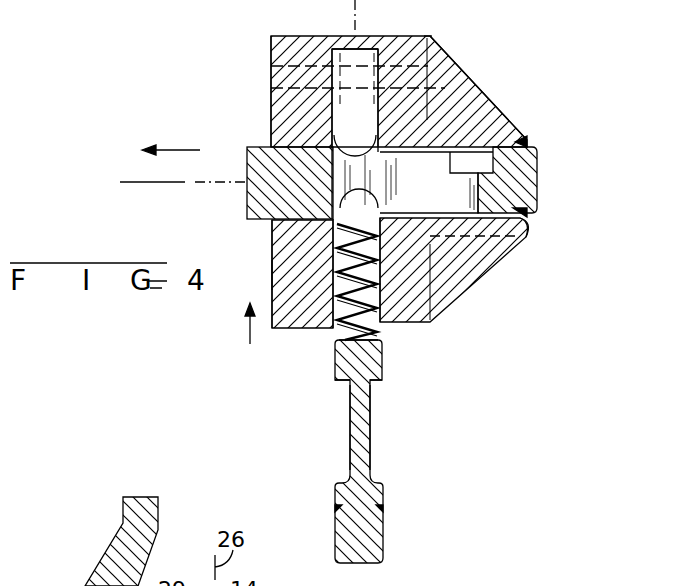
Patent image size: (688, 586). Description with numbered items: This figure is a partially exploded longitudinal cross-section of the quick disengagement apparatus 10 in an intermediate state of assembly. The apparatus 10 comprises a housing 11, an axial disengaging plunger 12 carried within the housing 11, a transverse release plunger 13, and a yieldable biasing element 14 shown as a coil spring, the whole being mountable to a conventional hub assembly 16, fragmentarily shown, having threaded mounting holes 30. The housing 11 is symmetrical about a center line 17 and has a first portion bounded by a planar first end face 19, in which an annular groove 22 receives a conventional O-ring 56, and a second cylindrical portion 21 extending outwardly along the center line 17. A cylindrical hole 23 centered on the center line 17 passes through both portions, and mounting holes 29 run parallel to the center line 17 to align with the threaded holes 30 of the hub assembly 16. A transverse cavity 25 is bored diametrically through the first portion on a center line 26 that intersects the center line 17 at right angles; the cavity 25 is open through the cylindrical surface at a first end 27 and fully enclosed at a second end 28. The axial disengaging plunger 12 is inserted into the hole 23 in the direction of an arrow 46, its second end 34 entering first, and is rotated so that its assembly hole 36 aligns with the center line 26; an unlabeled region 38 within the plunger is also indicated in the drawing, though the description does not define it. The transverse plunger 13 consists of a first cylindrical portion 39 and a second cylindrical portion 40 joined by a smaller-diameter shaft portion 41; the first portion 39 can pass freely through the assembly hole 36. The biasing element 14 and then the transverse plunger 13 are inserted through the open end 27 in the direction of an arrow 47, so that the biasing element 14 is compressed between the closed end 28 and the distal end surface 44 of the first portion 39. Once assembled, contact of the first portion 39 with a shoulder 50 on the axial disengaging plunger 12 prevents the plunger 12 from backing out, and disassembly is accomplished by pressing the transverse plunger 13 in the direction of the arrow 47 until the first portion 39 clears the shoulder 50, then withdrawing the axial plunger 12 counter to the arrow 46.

The quick disengagement apparatus 10 is at (433, 30).
The housing 11 is at (430, 318).
The axial disengaging plunger 12 is at (538, 164).
The transverse release plunger 13 is at (383, 415).
The yieldable biasing element 14 is at (315, 328).
The hub assembly 16 is at (115, 552).
The center line 17 is at (137, 182).
The first end face 19 is at (272, 242).
The second cylindrical portion 21 is at (524, 231).
The annular groove 22 is at (272, 98).
The cylindrical hole 23 is at (492, 98).
The transverse cavity 25 is at (433, 38).
The center line 26 is at (355, 28).
The first end 27 is at (383, 325).
The second end 28 is at (363, 47).
The mounting holes 29 is at (273, 68).
The threaded mounting holes 30 is at (42, 581).
The second end 34 is at (247, 205).
The assembly hole 36 is at (360, 156).
The chamber 38 is at (456, 162).
The first right circular cylindrical portion 39 is at (342, 363).
The second right circular cylindrical portion 40 is at (377, 523).
The shaft portion 41 is at (350, 422).
The distal end surface 44 is at (373, 339).
The arrow 46 is at (176, 150).
The arrow 47 is at (250, 333).
The shoulder 50 is at (427, 118).
The O-ring 56 is at (273, 270).